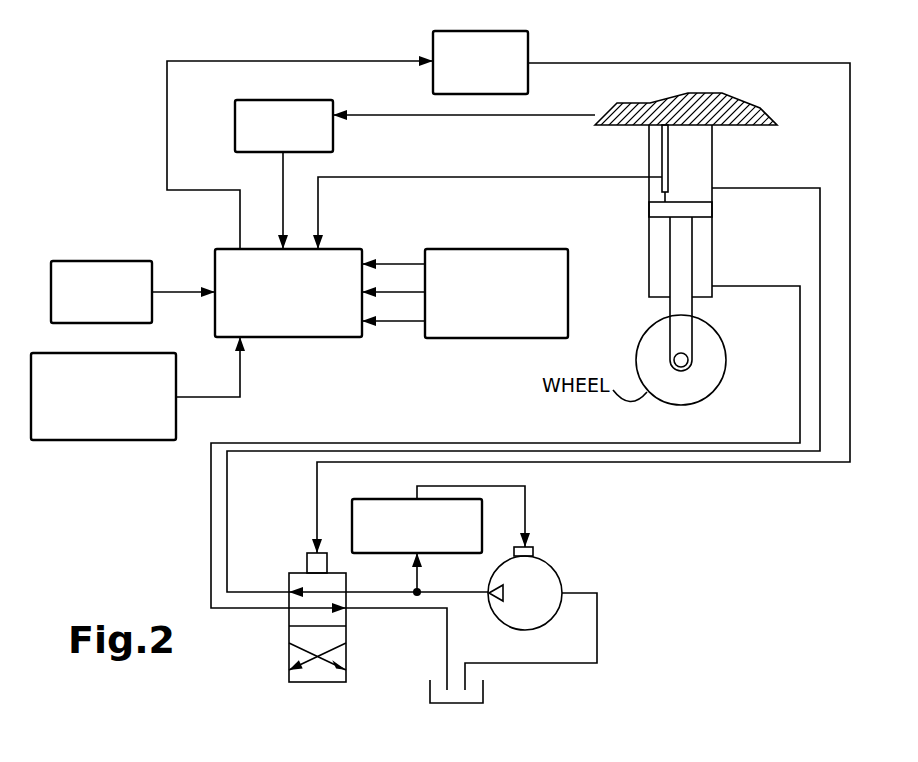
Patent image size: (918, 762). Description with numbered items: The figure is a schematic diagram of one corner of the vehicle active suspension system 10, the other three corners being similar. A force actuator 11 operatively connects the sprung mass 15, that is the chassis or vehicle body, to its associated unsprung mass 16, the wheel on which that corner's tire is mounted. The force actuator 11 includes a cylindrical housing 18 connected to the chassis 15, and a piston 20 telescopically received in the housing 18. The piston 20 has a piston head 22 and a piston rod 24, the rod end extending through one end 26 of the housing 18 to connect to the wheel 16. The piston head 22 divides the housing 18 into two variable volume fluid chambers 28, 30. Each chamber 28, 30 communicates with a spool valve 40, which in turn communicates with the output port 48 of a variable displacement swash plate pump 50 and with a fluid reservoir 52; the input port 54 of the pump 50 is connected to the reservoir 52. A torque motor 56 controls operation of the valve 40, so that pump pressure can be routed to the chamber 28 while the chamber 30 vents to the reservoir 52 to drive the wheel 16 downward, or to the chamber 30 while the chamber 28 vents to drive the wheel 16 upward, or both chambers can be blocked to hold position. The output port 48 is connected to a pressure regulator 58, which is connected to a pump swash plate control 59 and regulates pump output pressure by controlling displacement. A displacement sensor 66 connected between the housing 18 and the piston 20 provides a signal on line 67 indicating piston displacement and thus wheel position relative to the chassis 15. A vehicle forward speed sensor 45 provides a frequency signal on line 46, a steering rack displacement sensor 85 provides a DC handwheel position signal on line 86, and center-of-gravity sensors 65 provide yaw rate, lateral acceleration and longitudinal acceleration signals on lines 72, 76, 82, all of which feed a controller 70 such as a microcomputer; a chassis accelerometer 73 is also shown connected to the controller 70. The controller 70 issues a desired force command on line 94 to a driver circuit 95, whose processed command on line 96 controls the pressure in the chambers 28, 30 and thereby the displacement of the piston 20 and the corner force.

The vehicle active suspension system 10 is at (510, 157).
The force actuator 11 is at (637, 203).
The sprung mass 15 is at (613, 127).
The unsprung mass 16 is at (712, 355).
The cylindrical housing 18 is at (649, 232).
The piston 20 is at (707, 308).
The piston head 22 is at (703, 213).
The piston rod 24 is at (682, 268).
The end of the cylindrical housing 26 is at (668, 297).
The variable volume fluid chamber 28 is at (700, 175).
The variable volume fluid chamber 30 is at (700, 236).
The spool valve 40 is at (292, 682).
The vehicle forward speed sensor 45 is at (118, 260).
The line 46 is at (182, 290).
The output port 48 is at (485, 593).
The variable displacement swash plate pump 50 is at (537, 566).
The fluid reservoir 52 is at (465, 703).
The input port 54 is at (565, 593).
The torque motor 56 is at (318, 565).
The pressure regulator 58 is at (352, 535).
The pump swash plate control 59 is at (530, 548).
The center-of-gravity sensors 65 is at (487, 340).
The displacement sensor 66 is at (662, 168).
The line 67 is at (512, 177).
The controller 70 is at (272, 325).
The line 72 is at (400, 263).
The chassis accelerometer 73 is at (335, 129).
The line 76 is at (410, 292).
The line 82 is at (400, 322).
The steering rack displacement sensor 85 is at (68, 442).
The line 86 is at (192, 397).
The line 94 is at (316, 61).
The driver circuit 95 is at (516, 31).
The line 96 is at (672, 63).